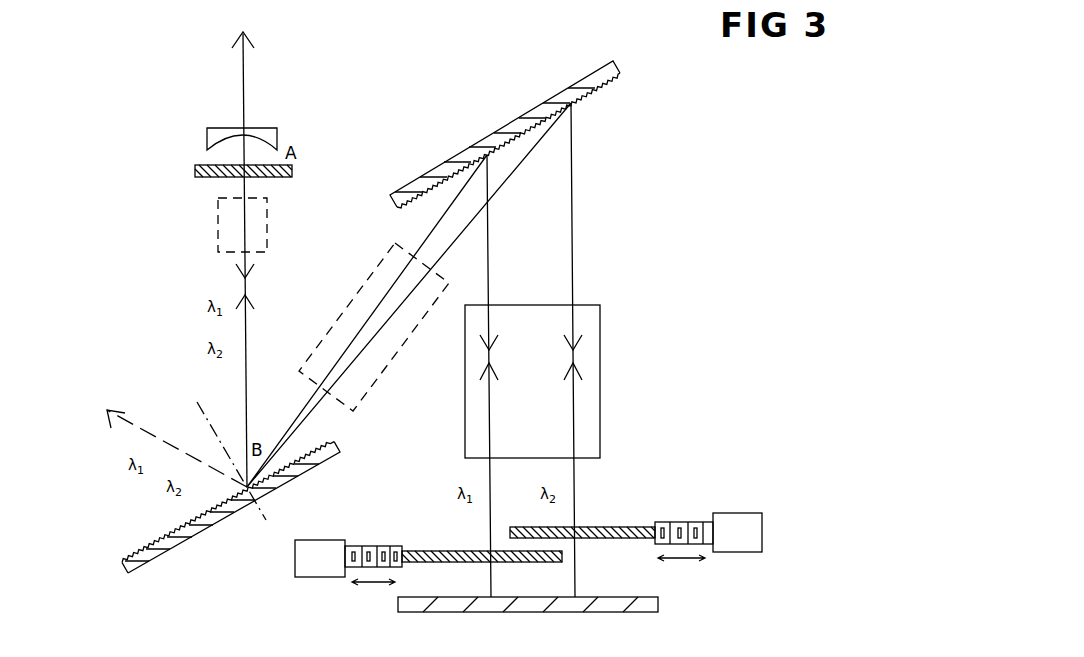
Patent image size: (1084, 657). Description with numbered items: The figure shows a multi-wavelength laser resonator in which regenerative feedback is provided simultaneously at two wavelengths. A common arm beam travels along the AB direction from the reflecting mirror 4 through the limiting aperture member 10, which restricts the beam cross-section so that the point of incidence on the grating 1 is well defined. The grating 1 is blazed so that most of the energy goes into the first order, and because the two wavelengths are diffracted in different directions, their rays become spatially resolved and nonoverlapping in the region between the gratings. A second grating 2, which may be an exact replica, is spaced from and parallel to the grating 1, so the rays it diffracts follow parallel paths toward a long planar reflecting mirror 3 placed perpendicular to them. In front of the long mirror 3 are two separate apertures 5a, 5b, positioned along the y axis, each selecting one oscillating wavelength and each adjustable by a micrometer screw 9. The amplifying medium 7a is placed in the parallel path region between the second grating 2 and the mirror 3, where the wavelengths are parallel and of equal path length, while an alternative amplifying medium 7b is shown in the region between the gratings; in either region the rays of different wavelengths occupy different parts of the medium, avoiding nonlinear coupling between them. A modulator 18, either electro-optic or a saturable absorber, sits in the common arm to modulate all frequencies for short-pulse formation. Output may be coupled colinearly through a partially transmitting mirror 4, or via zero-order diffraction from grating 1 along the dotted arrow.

The grating 1 is at (140, 553).
The second grating 2 is at (600, 83).
The long planar reflecting mirror 3 is at (640, 596).
The reflecting mirror 4 is at (207, 138).
The aperture 5a is at (442, 551).
The aperture 5b is at (600, 527).
The amplifying medium 7a is at (600, 345).
The amplifying medium 7b is at (358, 292).
The micrometer screw 9 is at (295, 577).
The limiting aperture member 10 is at (195, 170).
The modulator 18 is at (218, 236).